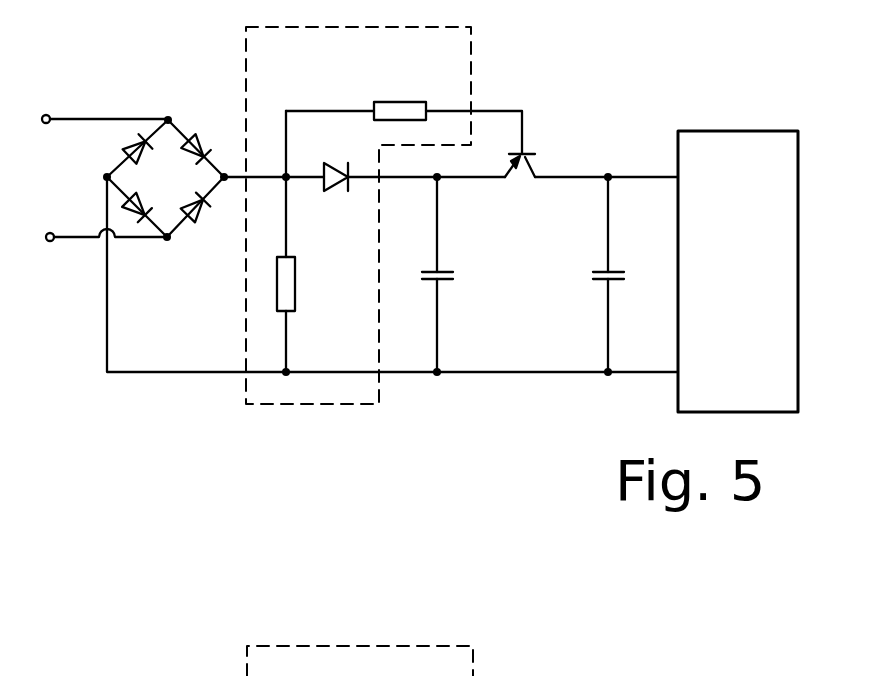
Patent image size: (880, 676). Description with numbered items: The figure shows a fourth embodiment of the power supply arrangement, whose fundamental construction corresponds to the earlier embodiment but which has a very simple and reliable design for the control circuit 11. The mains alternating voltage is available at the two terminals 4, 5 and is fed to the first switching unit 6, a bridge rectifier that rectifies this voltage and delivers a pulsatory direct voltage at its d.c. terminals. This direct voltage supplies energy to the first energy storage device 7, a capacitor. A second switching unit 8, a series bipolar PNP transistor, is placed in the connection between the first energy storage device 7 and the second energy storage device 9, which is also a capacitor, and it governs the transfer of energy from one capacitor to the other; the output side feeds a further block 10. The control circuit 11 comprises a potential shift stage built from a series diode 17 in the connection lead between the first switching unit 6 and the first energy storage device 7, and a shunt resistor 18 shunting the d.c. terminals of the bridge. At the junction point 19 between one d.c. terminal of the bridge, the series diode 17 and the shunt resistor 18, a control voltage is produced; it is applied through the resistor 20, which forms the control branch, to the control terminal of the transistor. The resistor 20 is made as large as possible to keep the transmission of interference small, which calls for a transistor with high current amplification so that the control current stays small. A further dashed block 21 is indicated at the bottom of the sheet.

The terminal 4 is at (46, 113).
The terminal 5 is at (50, 231).
The first switching unit 6 is at (178, 192).
The first energy storage device 7 is at (444, 283).
The second switching unit 8 is at (524, 179).
The second energy storage device 9 is at (614, 283).
The load circuit block 10 is at (759, 130).
The control circuit 11 is at (310, 85).
The series diode 17 is at (335, 163).
The shunt resistor 18 is at (296, 284).
The junction point 19 is at (288, 181).
The resistor 20 is at (408, 102).
The circuit block 21 is at (416, 670).